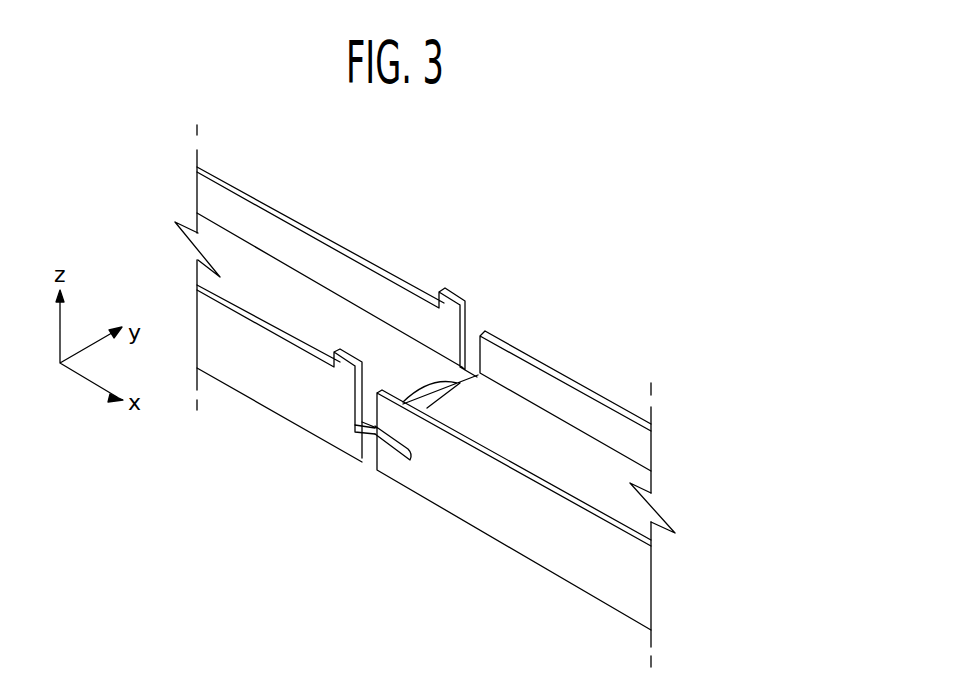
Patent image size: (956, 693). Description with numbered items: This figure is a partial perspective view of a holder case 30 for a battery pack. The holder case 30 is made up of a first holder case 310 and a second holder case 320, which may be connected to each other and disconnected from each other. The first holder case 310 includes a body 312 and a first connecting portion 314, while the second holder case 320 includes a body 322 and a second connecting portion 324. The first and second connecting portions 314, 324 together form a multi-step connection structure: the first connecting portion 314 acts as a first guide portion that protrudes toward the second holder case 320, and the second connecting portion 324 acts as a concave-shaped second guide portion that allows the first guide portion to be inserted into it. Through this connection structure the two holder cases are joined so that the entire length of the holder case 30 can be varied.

The holder case 30 is at (543, 194).
The first holder case 310 is at (365, 254).
The body 312 is at (272, 382).
The first connecting portion 314 is at (367, 450).
The second holder case 320 is at (551, 369).
The body 322 is at (557, 555).
The second connecting portion 324 is at (395, 482).